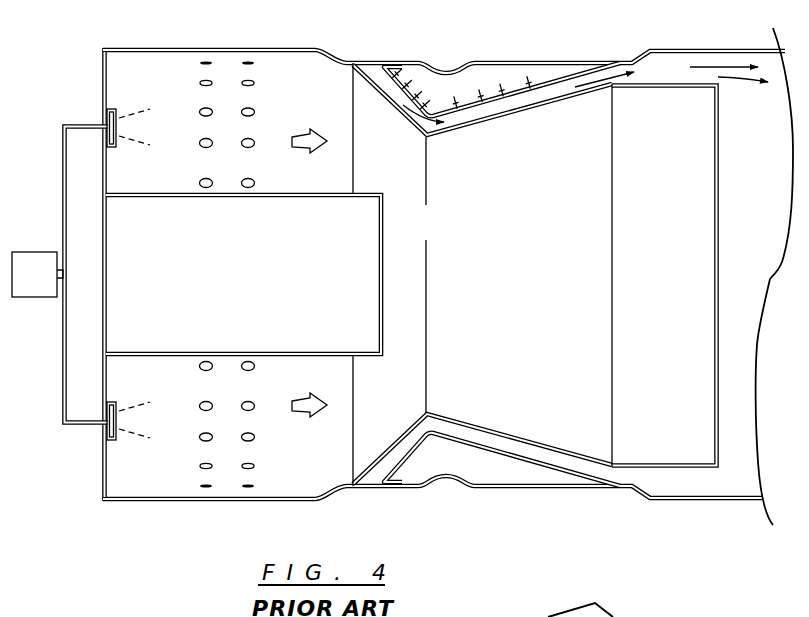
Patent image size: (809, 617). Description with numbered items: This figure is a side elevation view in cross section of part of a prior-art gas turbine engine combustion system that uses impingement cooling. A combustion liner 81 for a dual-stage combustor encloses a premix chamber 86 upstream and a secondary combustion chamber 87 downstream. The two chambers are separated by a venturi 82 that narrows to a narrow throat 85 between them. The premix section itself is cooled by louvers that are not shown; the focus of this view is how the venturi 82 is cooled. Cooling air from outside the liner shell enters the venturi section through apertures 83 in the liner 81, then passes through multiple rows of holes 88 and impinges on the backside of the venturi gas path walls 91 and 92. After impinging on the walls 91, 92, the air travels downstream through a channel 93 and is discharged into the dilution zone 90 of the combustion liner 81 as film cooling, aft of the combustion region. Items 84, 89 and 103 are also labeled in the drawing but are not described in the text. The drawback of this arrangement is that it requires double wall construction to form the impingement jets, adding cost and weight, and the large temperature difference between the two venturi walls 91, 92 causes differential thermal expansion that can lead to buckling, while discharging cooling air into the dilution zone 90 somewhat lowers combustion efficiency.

The combustion liner 81 is at (230, 44).
The venturi 82 is at (472, 140).
The apertures 83 is at (440, 67).
The igniter 84 is at (81, 274).
The narrow throat 85 is at (434, 235).
The premix chamber 86 is at (305, 118).
The secondary combustion chamber 87 is at (677, 226).
The holes 88 is at (513, 95).
The impingement sleeve 89 is at (598, 60).
The dilution zone 90 is at (764, 203).
The venturi flowpath wall 91 is at (402, 117).
The venturi flowpath wall 92 is at (526, 110).
The channel 93 is at (668, 62).
The cooling hole 103 is at (510, 616).